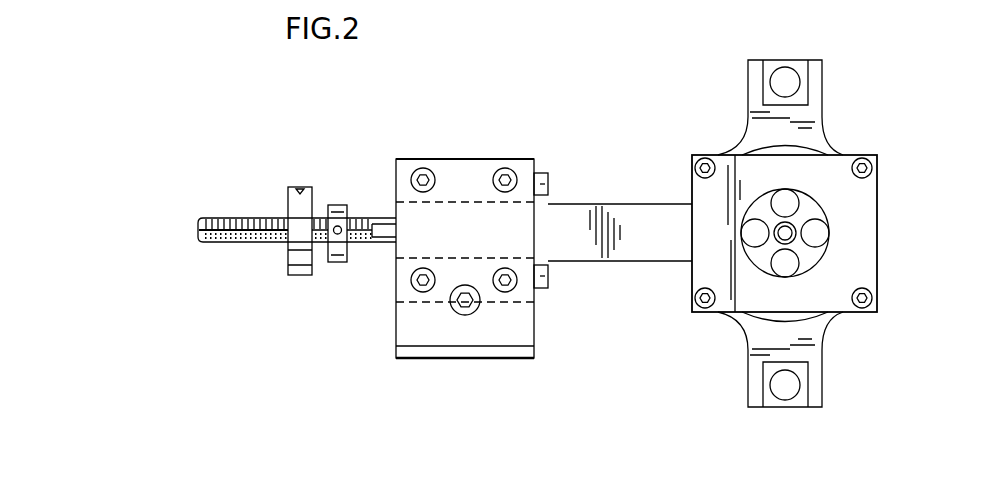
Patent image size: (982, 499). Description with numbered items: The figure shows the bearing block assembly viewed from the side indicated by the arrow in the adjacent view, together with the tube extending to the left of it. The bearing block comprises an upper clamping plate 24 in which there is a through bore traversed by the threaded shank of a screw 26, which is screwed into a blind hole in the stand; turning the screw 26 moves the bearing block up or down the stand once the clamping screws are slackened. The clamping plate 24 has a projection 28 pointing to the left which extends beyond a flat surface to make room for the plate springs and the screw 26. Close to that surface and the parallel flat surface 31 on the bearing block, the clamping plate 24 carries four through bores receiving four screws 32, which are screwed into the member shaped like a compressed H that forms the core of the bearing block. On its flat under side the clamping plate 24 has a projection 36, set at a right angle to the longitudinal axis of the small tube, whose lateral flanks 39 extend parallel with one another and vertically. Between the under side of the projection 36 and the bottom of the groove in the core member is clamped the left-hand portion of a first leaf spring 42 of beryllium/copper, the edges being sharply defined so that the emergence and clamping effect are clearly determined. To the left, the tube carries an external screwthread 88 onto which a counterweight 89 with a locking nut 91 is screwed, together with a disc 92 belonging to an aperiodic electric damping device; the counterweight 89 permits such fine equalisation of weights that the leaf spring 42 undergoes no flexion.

The clamping plate 24 is at (492, 293).
The screw 26 is at (455, 312).
The projection 28 is at (470, 340).
The flat surface 31 is at (523, 158).
The screws 32 is at (420, 169).
The projection 36 is at (413, 222).
The lateral flanks 39 is at (458, 200).
The first leaf spring 42 is at (638, 212).
The external screwthread 88 is at (233, 244).
The counterweight 89 is at (293, 213).
The locking nut 91 is at (337, 262).
The disc 92 is at (222, 232).